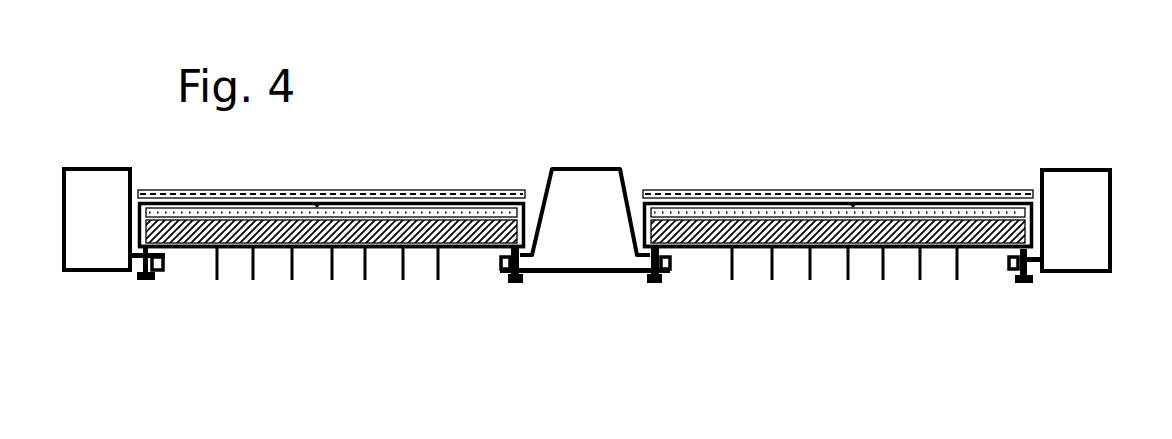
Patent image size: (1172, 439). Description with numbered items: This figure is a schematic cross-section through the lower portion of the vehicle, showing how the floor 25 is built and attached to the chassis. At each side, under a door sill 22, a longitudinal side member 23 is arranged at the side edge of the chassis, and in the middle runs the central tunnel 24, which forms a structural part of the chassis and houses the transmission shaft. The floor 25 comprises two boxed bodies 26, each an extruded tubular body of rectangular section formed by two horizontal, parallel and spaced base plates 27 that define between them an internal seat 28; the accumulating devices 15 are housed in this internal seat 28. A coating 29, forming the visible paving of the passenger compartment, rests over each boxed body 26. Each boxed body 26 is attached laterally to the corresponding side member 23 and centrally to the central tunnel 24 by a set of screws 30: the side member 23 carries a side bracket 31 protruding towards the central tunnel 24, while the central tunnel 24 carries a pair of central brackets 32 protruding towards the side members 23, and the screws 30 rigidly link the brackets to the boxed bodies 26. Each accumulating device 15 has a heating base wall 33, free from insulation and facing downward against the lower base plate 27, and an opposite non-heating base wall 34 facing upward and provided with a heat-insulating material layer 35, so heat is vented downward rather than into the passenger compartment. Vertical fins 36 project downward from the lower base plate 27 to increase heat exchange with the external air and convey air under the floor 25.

The accumulating device 15 is at (585, 219).
The door sill 22 is at (599, 197).
The longitudinal side member 23 is at (84, 167).
The central tunnel 24 is at (597, 168).
The floor 25 is at (572, 256).
The boxed body 26 is at (585, 210).
The horizontal base plate 27 is at (248, 204).
The internal seat 28 is at (426, 240).
The coating 29 is at (483, 195).
The screw 30 is at (147, 282).
The side bracket 31 is at (165, 264).
The central bracket 32 is at (500, 263).
The heating base wall 33 is at (345, 252).
The non-heating base wall 34 is at (318, 200).
The heat-insulating material layer 35 is at (398, 214).
The vertical fin 36 is at (292, 280).